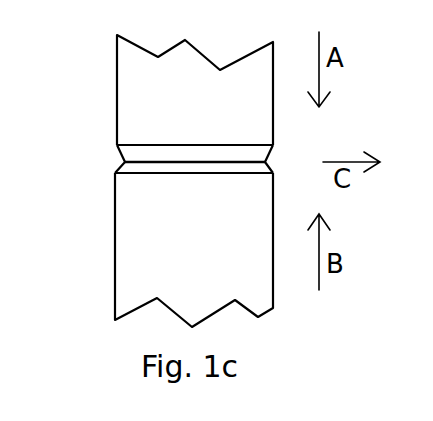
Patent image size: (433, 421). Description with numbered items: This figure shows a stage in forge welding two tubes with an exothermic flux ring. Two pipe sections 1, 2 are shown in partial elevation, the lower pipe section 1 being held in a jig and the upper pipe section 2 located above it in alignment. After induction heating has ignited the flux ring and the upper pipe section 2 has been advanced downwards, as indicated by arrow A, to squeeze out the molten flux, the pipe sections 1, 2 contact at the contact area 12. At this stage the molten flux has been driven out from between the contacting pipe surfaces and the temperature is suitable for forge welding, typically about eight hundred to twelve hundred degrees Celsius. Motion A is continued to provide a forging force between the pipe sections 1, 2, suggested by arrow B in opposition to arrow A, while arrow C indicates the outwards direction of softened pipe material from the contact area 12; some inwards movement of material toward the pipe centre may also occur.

The pipe section 1 is at (123, 240).
The pipe section 2 is at (118, 89).
The contact area 12 is at (266, 162).